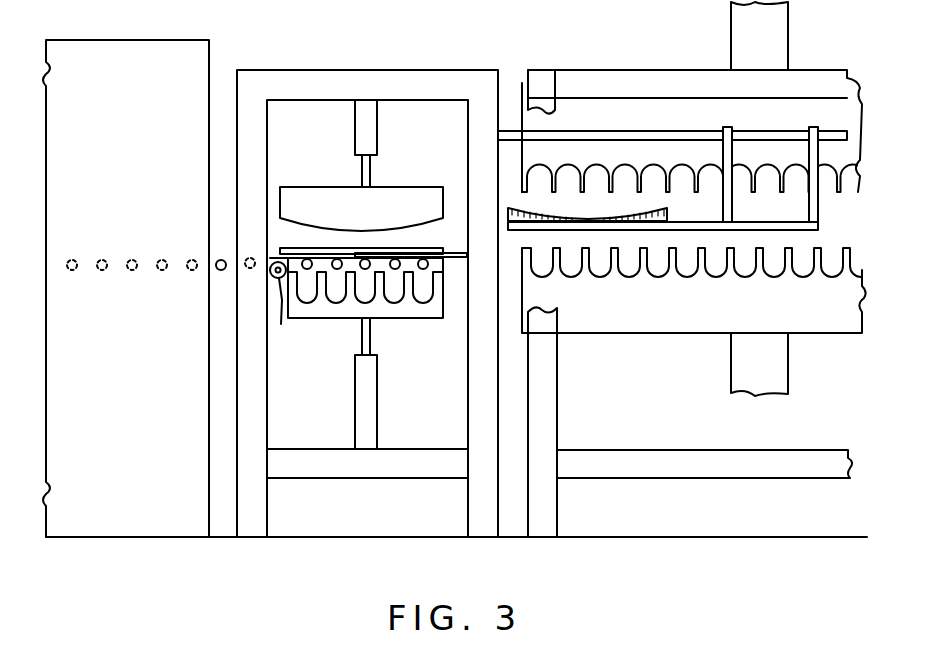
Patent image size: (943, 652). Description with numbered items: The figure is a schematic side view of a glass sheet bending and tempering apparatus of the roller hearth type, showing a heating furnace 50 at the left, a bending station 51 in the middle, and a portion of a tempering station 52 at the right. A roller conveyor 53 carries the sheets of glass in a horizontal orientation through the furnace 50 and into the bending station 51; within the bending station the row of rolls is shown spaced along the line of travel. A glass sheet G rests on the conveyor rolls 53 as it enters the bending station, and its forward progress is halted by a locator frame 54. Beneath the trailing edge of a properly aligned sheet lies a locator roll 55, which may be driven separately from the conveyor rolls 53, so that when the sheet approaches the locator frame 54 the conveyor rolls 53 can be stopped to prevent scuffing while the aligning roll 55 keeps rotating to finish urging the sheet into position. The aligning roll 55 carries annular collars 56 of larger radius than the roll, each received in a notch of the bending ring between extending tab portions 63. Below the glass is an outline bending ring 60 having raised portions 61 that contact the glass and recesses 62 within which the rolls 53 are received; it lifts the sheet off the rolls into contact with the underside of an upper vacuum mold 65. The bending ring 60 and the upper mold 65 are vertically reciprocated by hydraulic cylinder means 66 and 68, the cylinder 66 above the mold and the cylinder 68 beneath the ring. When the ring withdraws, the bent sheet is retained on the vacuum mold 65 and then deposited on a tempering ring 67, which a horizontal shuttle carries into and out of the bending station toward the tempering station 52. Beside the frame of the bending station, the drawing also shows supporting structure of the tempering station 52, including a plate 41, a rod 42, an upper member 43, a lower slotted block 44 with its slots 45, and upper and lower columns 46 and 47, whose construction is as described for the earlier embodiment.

The lower support plate 41 is at (818, 228).
The horizontal rod 42 is at (615, 131).
The upper pressure member 43 is at (528, 118).
The lower slotted block 44 is at (612, 333).
The lower comb slots 45 is at (815, 250).
The upper column 46 is at (788, 32).
The lower column 47 is at (788, 372).
The heating furnace 50 is at (132, 40).
The bending station 51 is at (359, 52).
The tempering station 52 is at (624, 52).
The roller conveyor 53 is at (130, 270).
The locator frame 54 is at (465, 258).
The locator roll 55 is at (285, 315).
The annular collars 56 is at (271, 281).
The outline bending ring 60 is at (438, 320).
The raised portions 61 is at (351, 302).
The recesses 62 is at (429, 302).
The extending tab portions 63 is at (271, 263).
The upper vacuum mold 65 is at (428, 226).
The hydraulic cylinder means 66 is at (377, 134).
The tempering ring 67 is at (540, 212).
The hydraulic cylinder means 68 is at (377, 414).
The glass sheet G is at (310, 248).